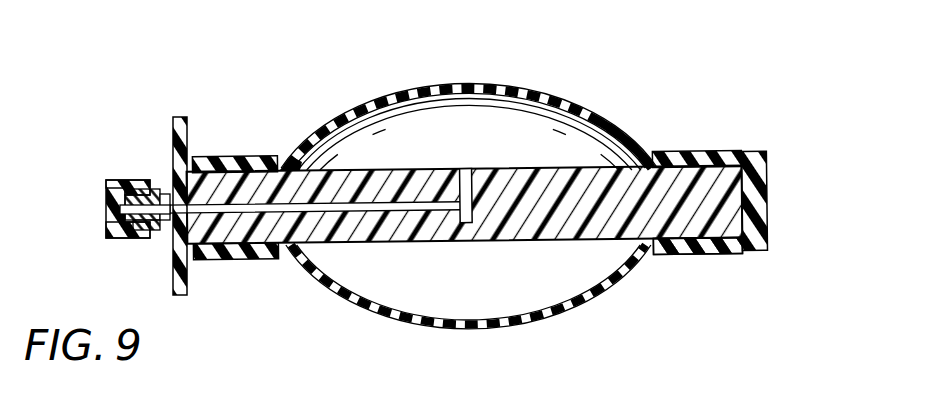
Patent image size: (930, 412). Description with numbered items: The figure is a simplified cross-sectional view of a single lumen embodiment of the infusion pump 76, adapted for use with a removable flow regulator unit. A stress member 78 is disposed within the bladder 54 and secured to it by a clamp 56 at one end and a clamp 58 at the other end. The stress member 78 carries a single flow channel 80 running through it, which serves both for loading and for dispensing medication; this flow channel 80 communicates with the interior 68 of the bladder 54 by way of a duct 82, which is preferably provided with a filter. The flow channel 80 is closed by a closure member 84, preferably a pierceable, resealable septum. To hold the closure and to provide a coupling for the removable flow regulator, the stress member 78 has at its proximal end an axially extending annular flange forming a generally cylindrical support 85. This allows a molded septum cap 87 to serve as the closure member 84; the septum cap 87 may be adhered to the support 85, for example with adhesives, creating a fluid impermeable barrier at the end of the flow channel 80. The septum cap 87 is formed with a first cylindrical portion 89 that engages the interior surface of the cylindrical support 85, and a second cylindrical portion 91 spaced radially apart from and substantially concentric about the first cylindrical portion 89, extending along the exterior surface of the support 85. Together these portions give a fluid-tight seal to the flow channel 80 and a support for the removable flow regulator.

The infusion pump 76 is at (333, 76).
The bladder 54 is at (536, 90).
The interior of bladder 68 is at (538, 293).
The clamp 56 is at (233, 262).
The clamp 58 is at (691, 262).
The stress member 78 is at (690, 178).
The flow channel 80 is at (232, 204).
The duct 82 is at (468, 171).
The closure member 84 is at (98, 210).
The cylindrical support 85 is at (160, 230).
The septum cap 87 is at (106, 232).
The first cylindrical portion 89 is at (150, 196).
The second cylindrical portion 91 is at (120, 180).